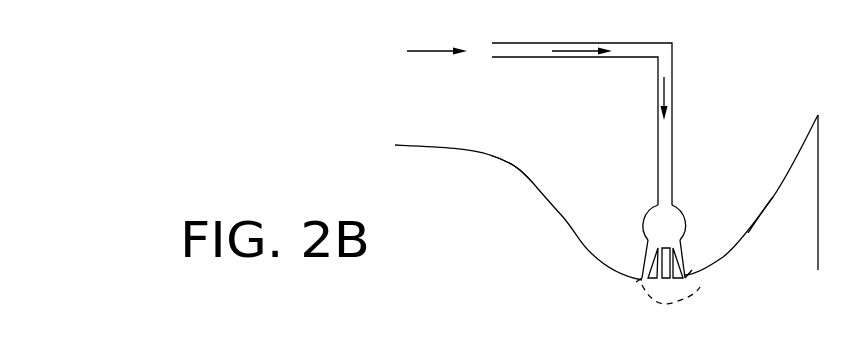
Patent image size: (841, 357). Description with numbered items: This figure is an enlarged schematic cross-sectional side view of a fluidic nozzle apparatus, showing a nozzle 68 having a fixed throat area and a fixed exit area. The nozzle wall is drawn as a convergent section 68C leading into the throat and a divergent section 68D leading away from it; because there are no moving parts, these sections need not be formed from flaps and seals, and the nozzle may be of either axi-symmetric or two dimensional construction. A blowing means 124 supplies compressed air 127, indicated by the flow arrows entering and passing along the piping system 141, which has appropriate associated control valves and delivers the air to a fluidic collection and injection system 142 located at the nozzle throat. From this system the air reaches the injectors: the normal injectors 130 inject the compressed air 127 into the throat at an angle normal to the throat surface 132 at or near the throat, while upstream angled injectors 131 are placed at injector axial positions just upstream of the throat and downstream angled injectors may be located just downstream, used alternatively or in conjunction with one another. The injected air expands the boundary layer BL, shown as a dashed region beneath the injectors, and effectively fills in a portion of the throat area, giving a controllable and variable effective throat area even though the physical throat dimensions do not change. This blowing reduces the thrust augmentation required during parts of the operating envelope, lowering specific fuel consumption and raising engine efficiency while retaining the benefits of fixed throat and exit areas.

The nozzle 68 is at (624, 178).
The convergent section 68C is at (540, 243).
The divergent section 68D is at (807, 255).
The compressed air 127 is at (427, 51).
The piping system 141 is at (672, 138).
The blowing means 124 is at (684, 190).
The fluidic collection and injection system 142 is at (647, 212).
The upstream angled injectors 131 is at (640, 280).
The normal injectors 130 is at (680, 268).
The throat surface 132 is at (690, 268).
The boundary layer BL is at (684, 296).